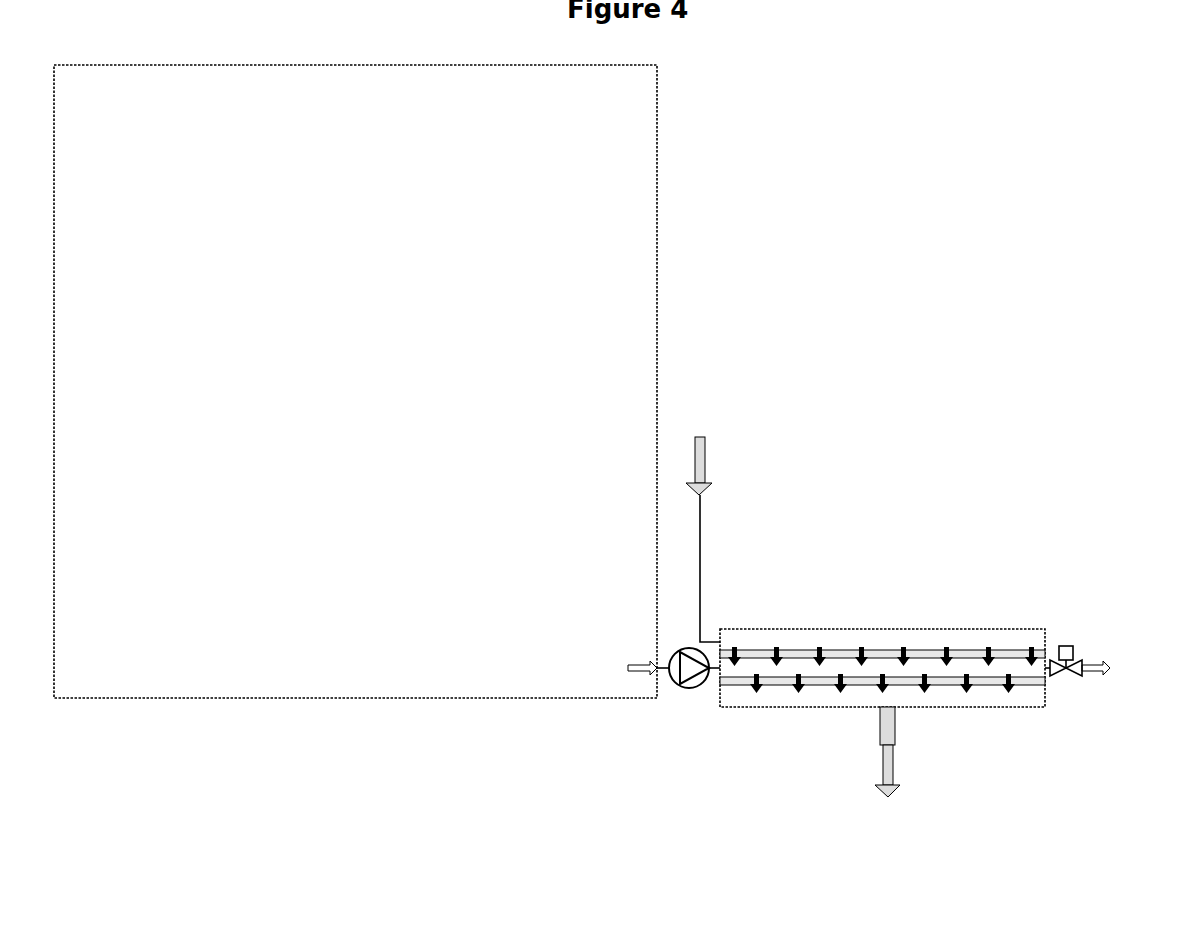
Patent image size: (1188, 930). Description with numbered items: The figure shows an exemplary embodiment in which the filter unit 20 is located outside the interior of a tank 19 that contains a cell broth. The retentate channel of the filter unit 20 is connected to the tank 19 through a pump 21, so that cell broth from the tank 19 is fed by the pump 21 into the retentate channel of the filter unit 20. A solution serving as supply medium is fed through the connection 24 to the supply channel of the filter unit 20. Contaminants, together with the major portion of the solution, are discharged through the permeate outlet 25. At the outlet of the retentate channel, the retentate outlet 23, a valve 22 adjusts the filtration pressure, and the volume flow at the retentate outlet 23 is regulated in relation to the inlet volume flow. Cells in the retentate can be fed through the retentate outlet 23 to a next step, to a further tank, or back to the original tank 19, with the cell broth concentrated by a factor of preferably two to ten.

The tank 19 is at (355, 381).
The filter unit 20 is at (890, 707).
The pump 21 is at (692, 686).
The valve 22 is at (1062, 678).
The retentate outlet 23 is at (1106, 662).
The connection 24 is at (703, 521).
The permeate outlet 25 is at (887, 770).